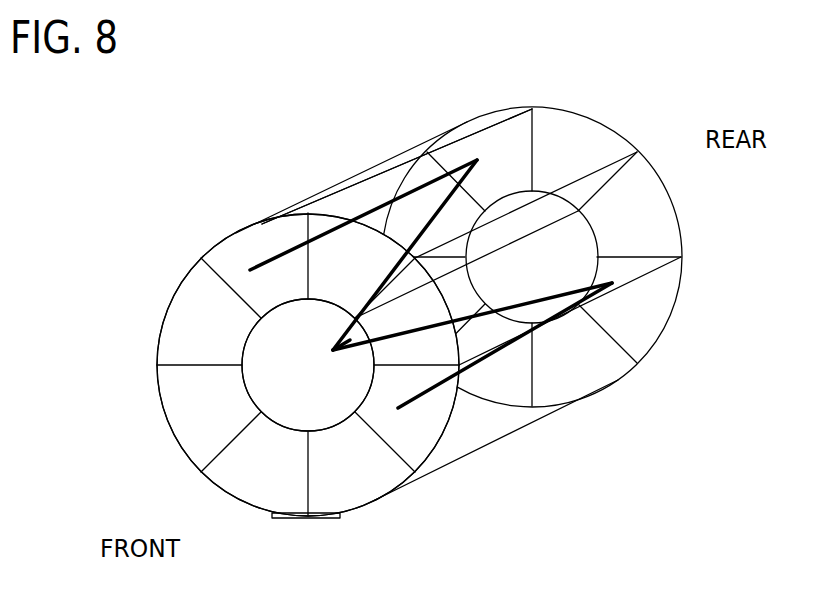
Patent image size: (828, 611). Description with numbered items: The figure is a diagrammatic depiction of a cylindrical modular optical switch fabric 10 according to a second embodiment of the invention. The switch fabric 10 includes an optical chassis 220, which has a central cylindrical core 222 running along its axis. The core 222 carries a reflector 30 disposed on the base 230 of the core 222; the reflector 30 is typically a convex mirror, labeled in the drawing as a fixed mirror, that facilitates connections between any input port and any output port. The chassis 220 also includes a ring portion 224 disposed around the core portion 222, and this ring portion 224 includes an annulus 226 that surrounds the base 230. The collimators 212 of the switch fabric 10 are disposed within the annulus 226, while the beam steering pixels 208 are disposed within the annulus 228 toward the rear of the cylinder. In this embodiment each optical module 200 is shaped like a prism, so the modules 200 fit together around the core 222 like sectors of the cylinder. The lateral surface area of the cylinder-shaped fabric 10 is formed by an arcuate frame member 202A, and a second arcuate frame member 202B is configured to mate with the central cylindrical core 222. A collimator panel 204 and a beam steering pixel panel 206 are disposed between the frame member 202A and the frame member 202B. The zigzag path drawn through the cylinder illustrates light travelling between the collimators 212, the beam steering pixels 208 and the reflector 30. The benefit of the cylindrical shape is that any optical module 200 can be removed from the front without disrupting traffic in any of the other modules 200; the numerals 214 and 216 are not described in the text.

The cylindrical modular optical switch fabric 10 is at (720, 72).
The reflector 30 is at (308, 365).
The optical module 200 is at (213, 245).
The arcuate frame member 202A is at (173, 299).
The arcuate frame member 202B is at (246, 350).
The collimator panel 204 is at (172, 346).
The beam steering pixel panel 206 is at (480, 122).
The beam steering pixels 208 is at (477, 162).
The collimators 212 is at (250, 270).
The support rib 214 is at (182, 281).
The rear end of housing 216 is at (681, 223).
The optical chassis 220 is at (333, 518).
The central cylindrical core 222 is at (370, 398).
The ring portion 224 is at (185, 458).
The annulus 226 is at (183, 402).
The annulus 228 is at (587, 140).
The base 230 is at (333, 413).